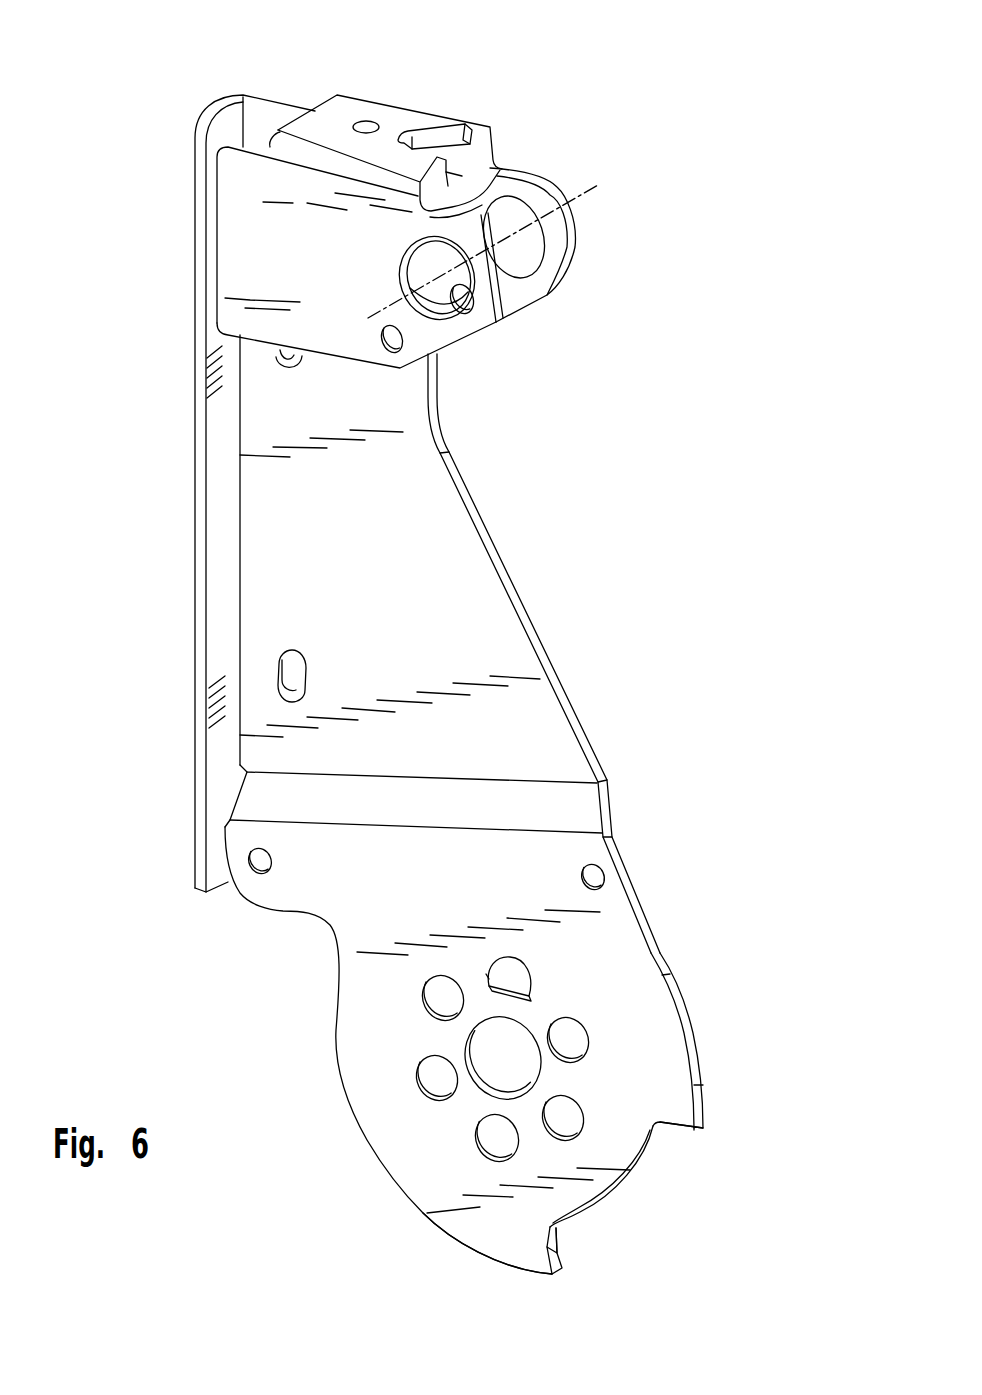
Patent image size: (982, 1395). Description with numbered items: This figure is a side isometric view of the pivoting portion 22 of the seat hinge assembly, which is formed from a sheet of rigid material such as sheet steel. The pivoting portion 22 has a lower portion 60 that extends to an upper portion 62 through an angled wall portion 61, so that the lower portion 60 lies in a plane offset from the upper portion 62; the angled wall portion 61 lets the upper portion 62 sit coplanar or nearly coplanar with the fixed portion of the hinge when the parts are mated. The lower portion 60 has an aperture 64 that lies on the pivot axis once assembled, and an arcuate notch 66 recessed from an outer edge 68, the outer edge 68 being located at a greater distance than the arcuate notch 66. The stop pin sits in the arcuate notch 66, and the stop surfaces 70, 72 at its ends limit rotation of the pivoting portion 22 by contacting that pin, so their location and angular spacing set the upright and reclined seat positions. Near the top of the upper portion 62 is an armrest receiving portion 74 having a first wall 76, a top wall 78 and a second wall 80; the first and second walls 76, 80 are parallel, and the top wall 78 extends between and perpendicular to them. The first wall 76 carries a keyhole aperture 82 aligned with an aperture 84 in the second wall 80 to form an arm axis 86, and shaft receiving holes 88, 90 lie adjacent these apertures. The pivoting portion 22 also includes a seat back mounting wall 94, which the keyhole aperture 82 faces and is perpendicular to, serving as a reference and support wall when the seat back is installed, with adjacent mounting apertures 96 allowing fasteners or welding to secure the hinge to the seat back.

The pivoting portion 22 is at (665, 532).
The lower portion 60 is at (648, 1027).
The angled wall portion 61 is at (570, 804).
The upper portion 62 is at (455, 540).
The aperture 64 is at (487, 1042).
The arcuate notch 66 is at (632, 1191).
The outer edge 68 is at (490, 1259).
The stop surface 70 is at (672, 1128).
The stop surface 72 is at (565, 1257).
The armrest receiving portion 74 is at (518, 112).
The first wall 76 is at (548, 257).
The top wall 78 is at (342, 107).
The second wall 80 is at (250, 252).
The keyhole aperture 82 is at (512, 262).
The aperture 84 is at (452, 326).
The arm axis 86 is at (592, 186).
The shaft receiving hole 88 is at (469, 302).
The shaft receiving hole 90 is at (410, 350).
The seat back mounting wall 94 is at (222, 511).
The mounting apertures 96 is at (282, 360).